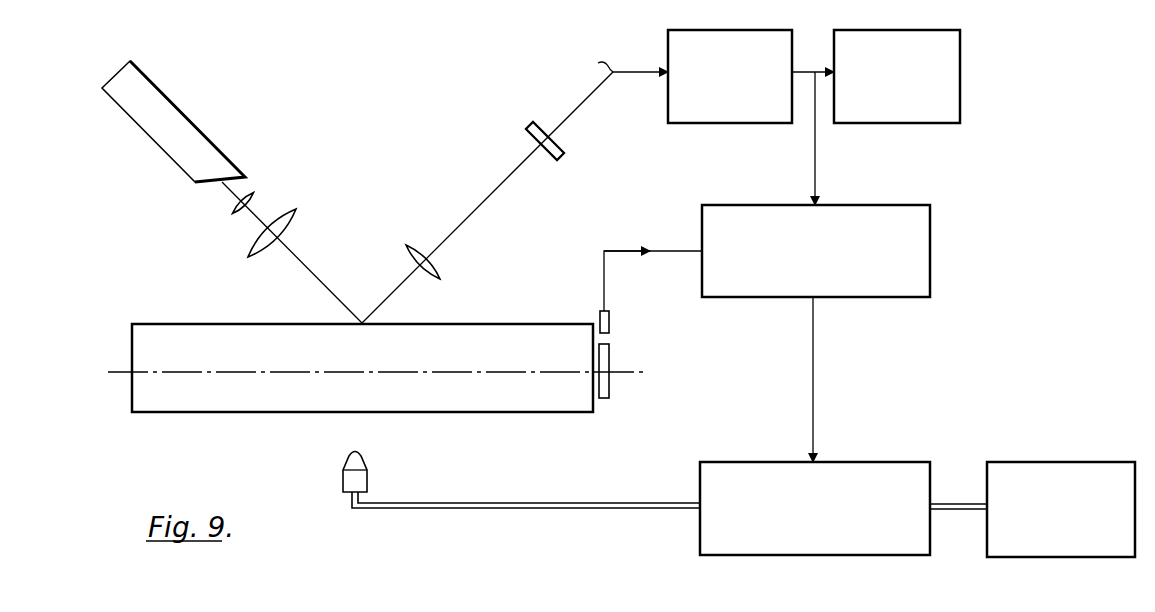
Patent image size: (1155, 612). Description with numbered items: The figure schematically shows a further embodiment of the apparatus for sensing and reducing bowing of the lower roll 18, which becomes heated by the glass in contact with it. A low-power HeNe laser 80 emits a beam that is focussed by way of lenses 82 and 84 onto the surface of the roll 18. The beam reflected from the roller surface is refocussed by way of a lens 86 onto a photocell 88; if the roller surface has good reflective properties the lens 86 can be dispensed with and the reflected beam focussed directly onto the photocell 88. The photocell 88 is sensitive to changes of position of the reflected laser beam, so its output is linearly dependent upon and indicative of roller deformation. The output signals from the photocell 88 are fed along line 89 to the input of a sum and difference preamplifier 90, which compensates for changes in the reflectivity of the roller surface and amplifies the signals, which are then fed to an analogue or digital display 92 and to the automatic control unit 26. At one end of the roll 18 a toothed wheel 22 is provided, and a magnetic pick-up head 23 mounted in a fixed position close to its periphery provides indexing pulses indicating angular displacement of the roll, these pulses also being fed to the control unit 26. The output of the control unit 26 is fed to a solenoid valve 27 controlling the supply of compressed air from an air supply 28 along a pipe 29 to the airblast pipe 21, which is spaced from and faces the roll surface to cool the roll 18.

The lower roll 18 is at (230, 407).
The airblast pipe 21 is at (358, 461).
The toothed wheel 22 is at (609, 390).
The magnetic pick-up head 23 is at (609, 320).
The automatic control unit 26 is at (930, 233).
The solenoid valve 27 is at (744, 462).
The air supply 28 is at (1028, 462).
The pipe 29 is at (500, 502).
The HeNe laser 80 is at (200, 130).
The lens 82 is at (252, 197).
The lens 84 is at (297, 218).
The lens 86 is at (407, 247).
The photocell 88 is at (530, 131).
The line 89 is at (592, 69).
The sum and difference preamplifier 90 is at (728, 123).
The display 92 is at (900, 123).